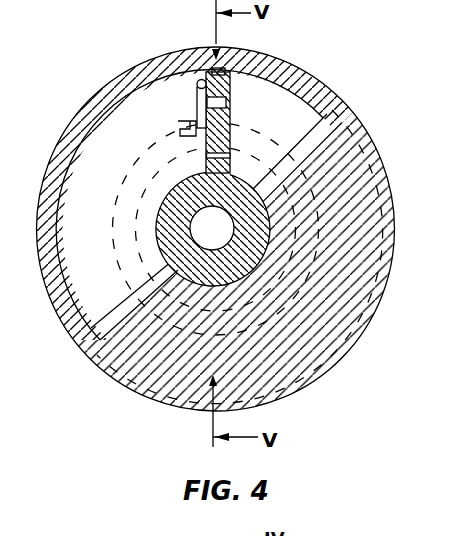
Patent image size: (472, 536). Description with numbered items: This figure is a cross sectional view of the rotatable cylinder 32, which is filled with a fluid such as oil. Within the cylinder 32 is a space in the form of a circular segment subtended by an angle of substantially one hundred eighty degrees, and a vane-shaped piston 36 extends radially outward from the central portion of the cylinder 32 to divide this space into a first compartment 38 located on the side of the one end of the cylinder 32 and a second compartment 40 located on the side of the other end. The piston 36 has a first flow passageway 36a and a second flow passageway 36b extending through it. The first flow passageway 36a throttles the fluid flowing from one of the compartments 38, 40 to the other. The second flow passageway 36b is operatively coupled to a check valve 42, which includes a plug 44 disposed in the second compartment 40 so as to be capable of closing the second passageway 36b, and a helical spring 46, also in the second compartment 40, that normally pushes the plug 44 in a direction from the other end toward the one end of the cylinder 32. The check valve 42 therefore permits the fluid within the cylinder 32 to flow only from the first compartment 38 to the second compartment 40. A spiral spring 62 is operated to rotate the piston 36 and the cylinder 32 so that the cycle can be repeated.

The rotatable cylinder 32 is at (359, 138).
The piston 36 is at (249, 56).
The first flow passageway 36a is at (160, 165).
The second flow passageway 36b is at (231, 107).
The first compartment 38 is at (337, 100).
The second compartment 40 is at (92, 290).
The check valve 42 is at (193, 100).
The plug 44 is at (84, 26).
The helical spring 46 is at (178, 121).
The spiral spring 62 is at (383, 209).